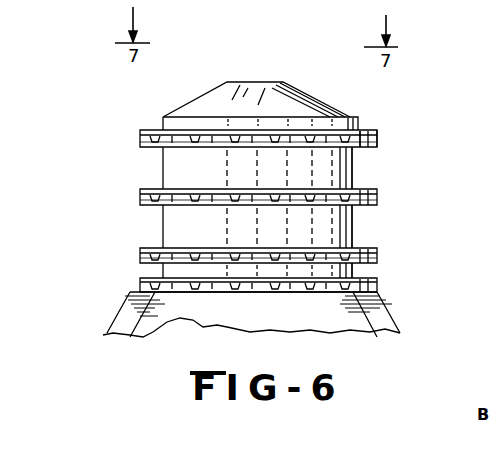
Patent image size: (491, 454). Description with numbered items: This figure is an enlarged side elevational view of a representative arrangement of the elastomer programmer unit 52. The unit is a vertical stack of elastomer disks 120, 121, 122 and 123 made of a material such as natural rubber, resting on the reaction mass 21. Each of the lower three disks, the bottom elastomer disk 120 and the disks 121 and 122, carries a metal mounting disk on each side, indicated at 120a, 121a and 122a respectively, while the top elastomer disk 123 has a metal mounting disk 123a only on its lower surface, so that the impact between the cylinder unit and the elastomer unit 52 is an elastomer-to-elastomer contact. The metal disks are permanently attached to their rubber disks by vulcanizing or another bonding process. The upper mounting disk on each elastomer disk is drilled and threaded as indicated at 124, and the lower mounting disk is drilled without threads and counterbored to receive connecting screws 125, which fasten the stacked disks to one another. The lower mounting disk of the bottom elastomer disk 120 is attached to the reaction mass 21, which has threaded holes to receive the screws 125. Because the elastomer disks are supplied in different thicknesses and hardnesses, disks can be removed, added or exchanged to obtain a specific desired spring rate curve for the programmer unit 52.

The reaction mass 21 is at (347, 324).
The elastomer programmer unit 52 is at (395, 143).
The bottom elastomer disk 120 is at (197, 274).
The metal mounting disk 120a is at (372, 265).
The elastomer disk 121 is at (172, 222).
The metal mounting disk 121a is at (372, 205).
The elastomer disk 122 is at (172, 160).
The metal mounting disk 122a is at (372, 148).
The top elastomer disk 123 is at (198, 100).
The metal mounting disk 123a is at (370, 133).
The drilled and threaded holes 124 is at (147, 142).
The connecting screws 125 is at (148, 127).